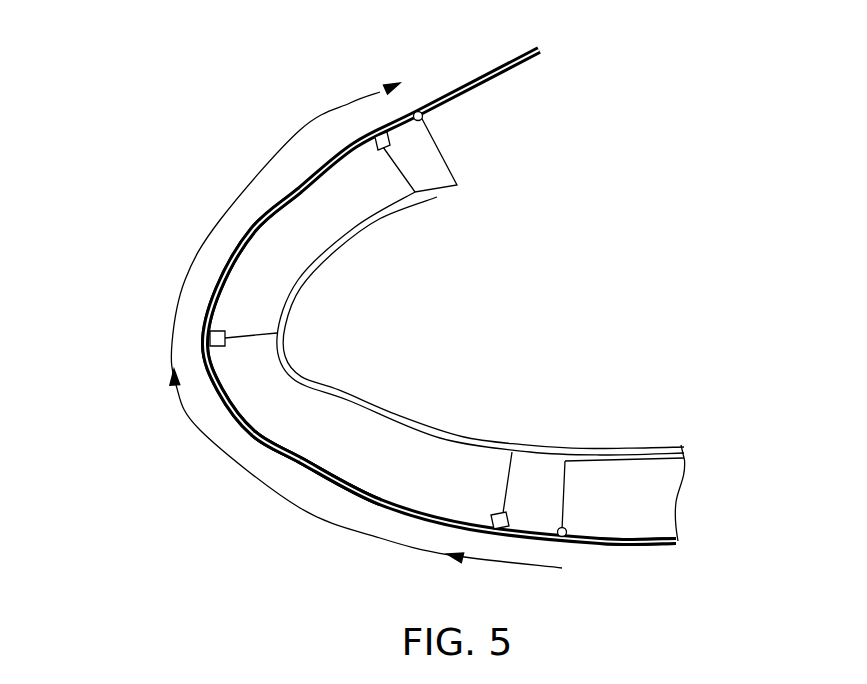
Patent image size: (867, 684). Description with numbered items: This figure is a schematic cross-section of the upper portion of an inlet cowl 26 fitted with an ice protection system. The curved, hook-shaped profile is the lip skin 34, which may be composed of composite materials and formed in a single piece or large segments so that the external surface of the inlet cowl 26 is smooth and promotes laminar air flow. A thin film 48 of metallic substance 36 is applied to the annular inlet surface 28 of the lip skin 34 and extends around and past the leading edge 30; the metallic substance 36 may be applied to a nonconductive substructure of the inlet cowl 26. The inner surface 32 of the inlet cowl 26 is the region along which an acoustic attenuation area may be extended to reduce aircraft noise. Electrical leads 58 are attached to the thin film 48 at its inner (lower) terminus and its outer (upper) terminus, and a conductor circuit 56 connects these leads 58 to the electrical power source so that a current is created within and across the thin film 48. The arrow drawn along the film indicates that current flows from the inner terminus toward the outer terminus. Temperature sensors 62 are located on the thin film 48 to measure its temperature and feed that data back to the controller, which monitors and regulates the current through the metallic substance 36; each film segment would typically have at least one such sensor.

The inlet cowl 26 is at (163, 111).
The annular inlet surface 28 is at (240, 445).
The leading edge 30 is at (186, 344).
The inner surface 32 is at (657, 546).
The lip skin 34 is at (323, 467).
The metallic substance 36 is at (283, 460).
The thin film 48 is at (357, 499).
The conductor circuit 56 is at (440, 198).
The electrical leads 58 is at (421, 111).
The temperature sensors 62 is at (381, 135).